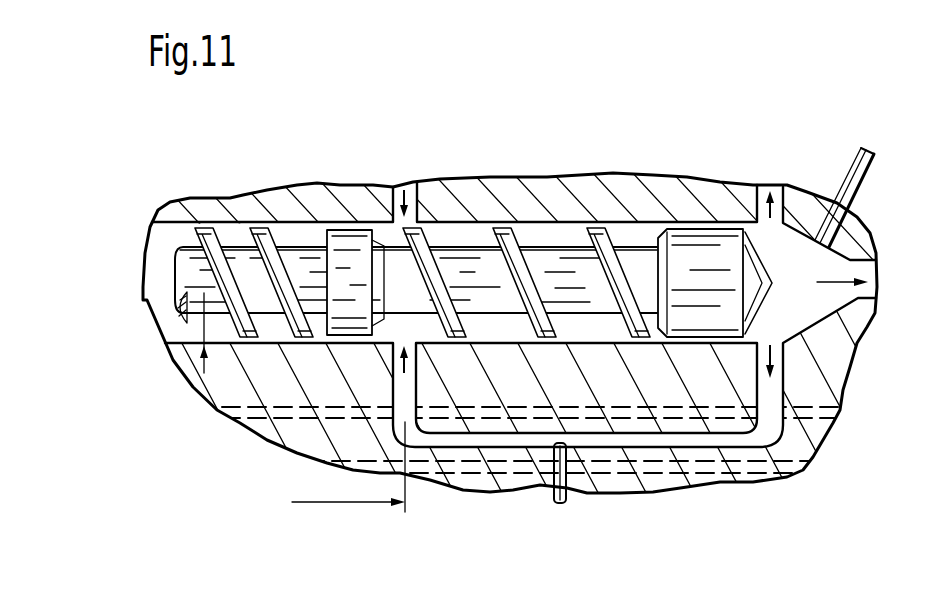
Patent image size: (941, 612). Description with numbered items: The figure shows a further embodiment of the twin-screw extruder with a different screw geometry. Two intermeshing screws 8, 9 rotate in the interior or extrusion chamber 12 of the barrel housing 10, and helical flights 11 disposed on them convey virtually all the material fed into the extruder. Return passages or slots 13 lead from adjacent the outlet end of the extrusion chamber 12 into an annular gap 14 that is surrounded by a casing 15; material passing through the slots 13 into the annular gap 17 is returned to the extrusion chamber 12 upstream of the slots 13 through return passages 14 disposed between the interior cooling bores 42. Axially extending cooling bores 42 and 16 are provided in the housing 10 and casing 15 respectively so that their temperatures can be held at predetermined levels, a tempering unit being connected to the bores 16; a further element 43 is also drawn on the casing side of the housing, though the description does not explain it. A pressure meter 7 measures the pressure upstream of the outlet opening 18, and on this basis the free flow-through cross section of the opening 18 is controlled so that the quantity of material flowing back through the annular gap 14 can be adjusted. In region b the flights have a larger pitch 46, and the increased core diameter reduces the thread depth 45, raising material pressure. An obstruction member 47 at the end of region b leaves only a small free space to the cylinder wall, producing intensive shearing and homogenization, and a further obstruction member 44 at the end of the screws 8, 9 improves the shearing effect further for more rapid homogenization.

The pressure meter 7 is at (840, 217).
The screw 8 is at (648, 263).
The screw 9 is at (648, 263).
The barrel housing 10 is at (495, 397).
The helical flight 11 is at (507, 237).
The extrusion chamber 12 is at (452, 240).
The return passage 13 is at (776, 200).
The annular gap 14 is at (703, 440).
The casing 15 is at (817, 433).
The cooling bore 16 is at (443, 467).
The annular gap 17 is at (412, 193).
The outlet opening 18 is at (877, 303).
The cooling bore 42 is at (640, 410).
The pin 43 is at (557, 503).
The obstruction member 44 is at (710, 250).
The thread depth 45 is at (203, 333).
The pitch 46 is at (218, 262).
The obstruction member 47 is at (352, 243).